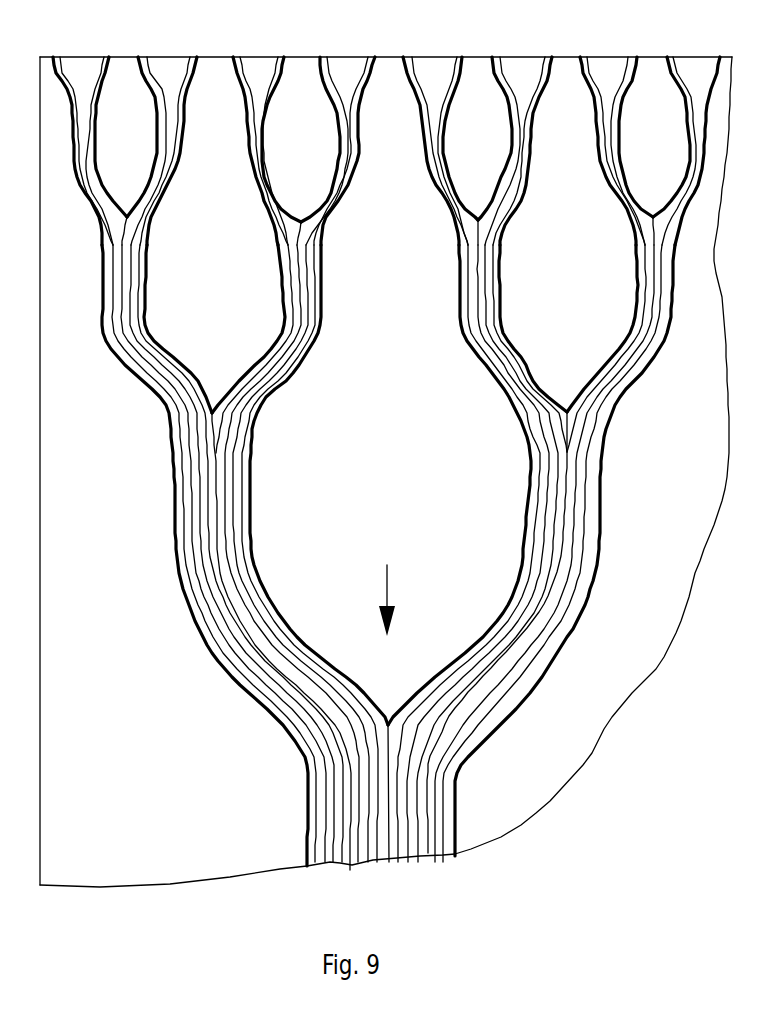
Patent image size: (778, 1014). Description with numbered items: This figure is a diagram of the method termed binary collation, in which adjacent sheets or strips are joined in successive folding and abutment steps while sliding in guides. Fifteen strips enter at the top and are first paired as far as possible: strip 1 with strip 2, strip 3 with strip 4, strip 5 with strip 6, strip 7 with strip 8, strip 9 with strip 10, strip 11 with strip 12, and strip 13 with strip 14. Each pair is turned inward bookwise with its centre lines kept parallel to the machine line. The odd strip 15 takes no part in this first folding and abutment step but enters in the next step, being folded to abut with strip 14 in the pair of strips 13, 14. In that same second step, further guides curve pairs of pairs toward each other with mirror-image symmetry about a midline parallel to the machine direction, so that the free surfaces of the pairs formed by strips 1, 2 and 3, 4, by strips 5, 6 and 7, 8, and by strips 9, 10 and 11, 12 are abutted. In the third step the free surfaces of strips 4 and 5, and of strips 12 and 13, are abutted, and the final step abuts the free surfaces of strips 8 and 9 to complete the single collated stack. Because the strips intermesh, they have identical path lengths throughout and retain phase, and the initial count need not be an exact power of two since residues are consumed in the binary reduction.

The strip 1 is at (58, 57).
The strip 2 is at (104, 57).
The strip 3 is at (147, 57).
The strip 4 is at (190, 57).
The strip 5 is at (236, 57).
The strip 6 is at (280, 57).
The strip 7 is at (323, 57).
The strip 8 is at (367, 57).
The strip 9 is at (411, 57).
The strip 10 is at (455, 57).
The strip 11 is at (498, 57).
The strip 12 is at (543, 57).
The strip 13 is at (587, 57).
The strip 14 is at (630, 57).
The odd strip 15 is at (674, 57).